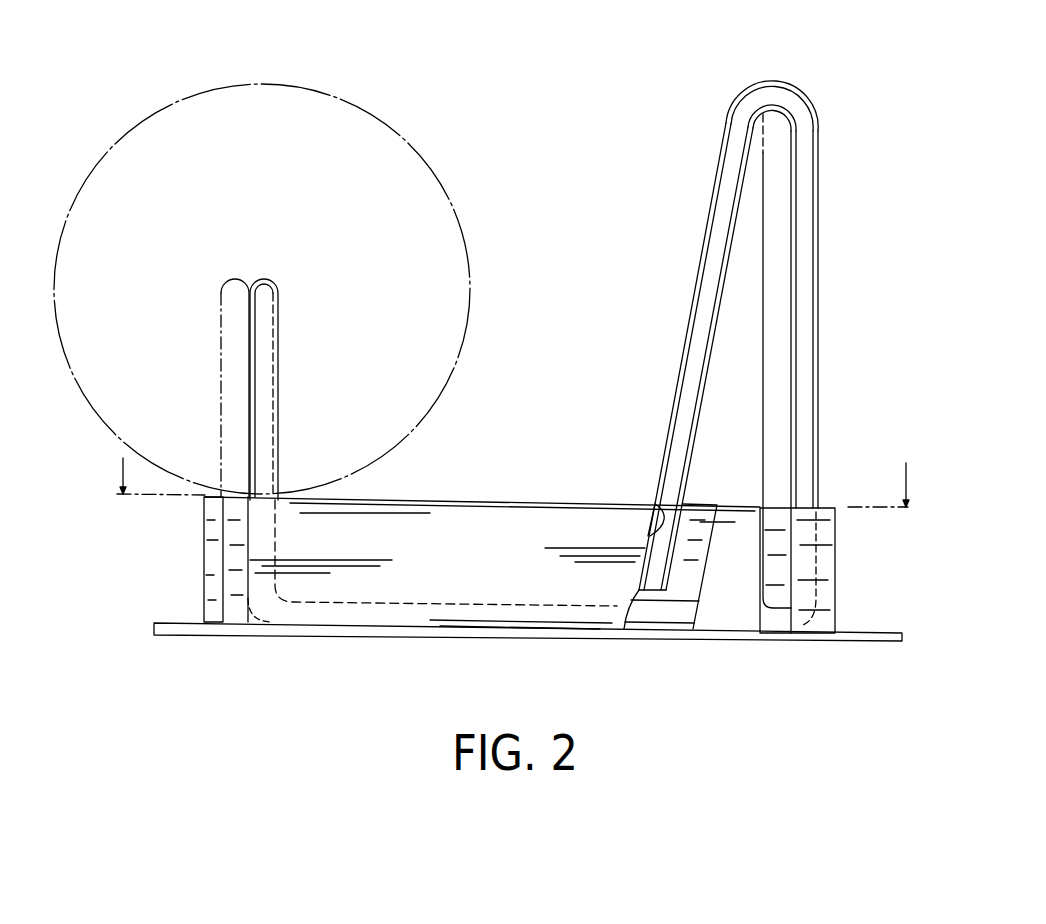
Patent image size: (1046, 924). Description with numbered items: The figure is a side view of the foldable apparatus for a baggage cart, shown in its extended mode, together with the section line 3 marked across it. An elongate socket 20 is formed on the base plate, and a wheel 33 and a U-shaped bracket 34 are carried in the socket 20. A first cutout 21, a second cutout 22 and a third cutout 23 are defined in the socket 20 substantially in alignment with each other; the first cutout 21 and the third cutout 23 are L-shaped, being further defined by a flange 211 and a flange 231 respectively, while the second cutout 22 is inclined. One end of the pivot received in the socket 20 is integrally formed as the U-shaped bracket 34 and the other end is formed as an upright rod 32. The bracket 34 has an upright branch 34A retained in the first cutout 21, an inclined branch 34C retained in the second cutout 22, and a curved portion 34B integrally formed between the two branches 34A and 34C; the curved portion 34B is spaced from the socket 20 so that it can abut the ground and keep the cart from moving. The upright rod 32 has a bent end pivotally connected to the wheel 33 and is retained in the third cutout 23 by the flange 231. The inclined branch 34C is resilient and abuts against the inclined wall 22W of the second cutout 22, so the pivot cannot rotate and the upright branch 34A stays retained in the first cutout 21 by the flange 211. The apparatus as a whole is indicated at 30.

The section line 3- 3 is at (506, 470).
The elongate socket 20 is at (534, 520).
The first cutout 21 is at (777, 522).
The flange 211 is at (802, 557).
The second cutout 22 is at (703, 512).
The inclined wall 22W is at (655, 505).
The third cutout 23 is at (225, 518).
The flange 231 is at (262, 537).
The clip assembly 30 is at (774, 334).
The upright rod 32 is at (232, 363).
The wheel 33 is at (420, 232).
The U-shaped bracket 34 is at (757, 334).
The upright branch 34A is at (781, 318).
The curved portion 34B is at (788, 86).
The inclined branch 34C is at (709, 263).